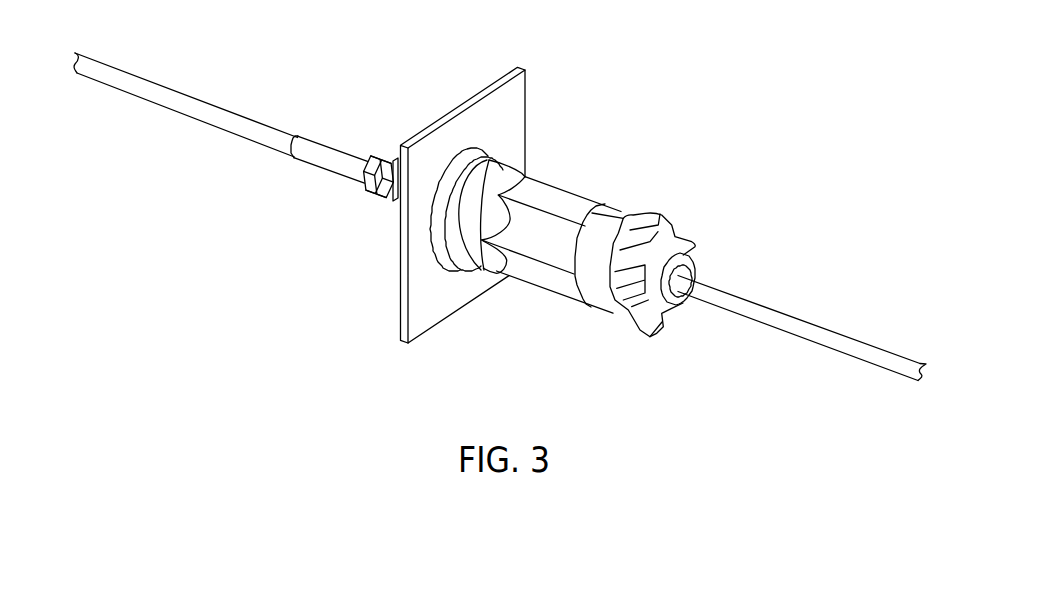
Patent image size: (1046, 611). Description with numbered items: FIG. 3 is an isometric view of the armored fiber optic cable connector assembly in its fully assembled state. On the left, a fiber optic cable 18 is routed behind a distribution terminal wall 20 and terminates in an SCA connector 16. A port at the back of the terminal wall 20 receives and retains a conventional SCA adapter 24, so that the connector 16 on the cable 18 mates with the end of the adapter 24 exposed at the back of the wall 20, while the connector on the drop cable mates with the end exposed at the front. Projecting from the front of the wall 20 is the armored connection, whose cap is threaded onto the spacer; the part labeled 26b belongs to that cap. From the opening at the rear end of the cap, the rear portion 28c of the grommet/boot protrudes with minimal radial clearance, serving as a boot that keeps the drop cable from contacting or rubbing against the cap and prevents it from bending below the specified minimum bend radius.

The fiber optic cable 18 is at (260, 126).
The SCA connector 16 is at (379, 156).
The distribution terminal wall 20 is at (513, 115).
The SCA adapter 24 is at (396, 205).
The hub nut 26b is at (680, 238).
The rear portion of the grommet/boot 28c is at (684, 304).